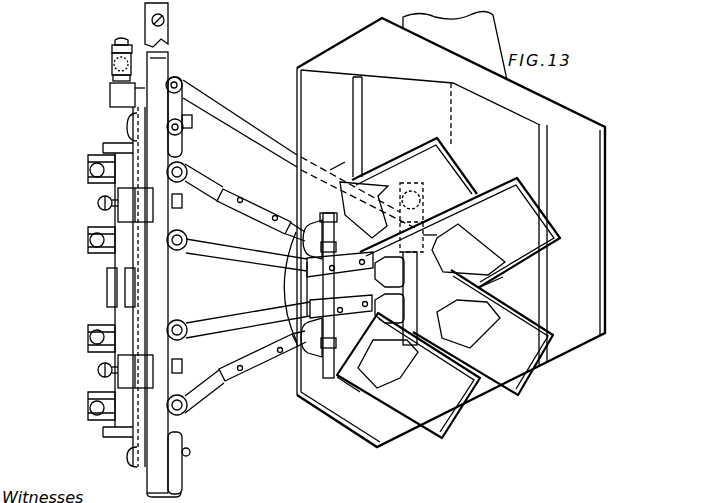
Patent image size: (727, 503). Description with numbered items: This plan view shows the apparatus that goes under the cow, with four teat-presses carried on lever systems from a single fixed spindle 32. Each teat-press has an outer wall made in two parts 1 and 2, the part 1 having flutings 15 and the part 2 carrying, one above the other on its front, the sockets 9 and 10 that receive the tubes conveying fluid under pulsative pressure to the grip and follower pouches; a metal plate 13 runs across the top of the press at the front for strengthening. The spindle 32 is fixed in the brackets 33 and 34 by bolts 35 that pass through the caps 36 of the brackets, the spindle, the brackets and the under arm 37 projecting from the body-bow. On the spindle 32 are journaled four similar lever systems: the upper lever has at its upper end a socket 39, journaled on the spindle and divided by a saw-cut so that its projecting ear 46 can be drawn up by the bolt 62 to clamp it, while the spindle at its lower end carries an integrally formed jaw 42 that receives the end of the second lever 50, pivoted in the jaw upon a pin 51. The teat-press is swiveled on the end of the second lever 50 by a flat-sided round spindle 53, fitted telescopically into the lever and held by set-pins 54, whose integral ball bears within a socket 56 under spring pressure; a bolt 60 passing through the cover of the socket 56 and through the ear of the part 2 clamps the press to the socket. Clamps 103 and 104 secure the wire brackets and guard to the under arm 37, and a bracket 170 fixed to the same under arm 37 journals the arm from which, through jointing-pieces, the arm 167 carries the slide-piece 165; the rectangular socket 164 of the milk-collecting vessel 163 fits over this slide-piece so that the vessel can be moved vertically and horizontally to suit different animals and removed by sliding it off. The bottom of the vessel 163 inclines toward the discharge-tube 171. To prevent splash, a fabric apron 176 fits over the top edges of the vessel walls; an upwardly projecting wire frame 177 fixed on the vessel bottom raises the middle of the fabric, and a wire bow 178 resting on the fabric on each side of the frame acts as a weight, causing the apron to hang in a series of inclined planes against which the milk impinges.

The outer wall part 1 is at (457, 160).
The outer wall part 2 is at (337, 170).
The socket 9 is at (322, 313).
The socket 10 is at (328, 223).
The metal plate 13 is at (393, 212).
The flutings 15 is at (408, 153).
The spindle 32 is at (113, 292).
The bracket 33 is at (130, 207).
The bracket 34 is at (128, 363).
The bolts 35 is at (182, 205).
The caps 36 is at (110, 193).
The under arm 37 is at (167, 68).
The socket 39 is at (128, 157).
The jaw 42 is at (184, 160).
The ear 46 is at (97, 157).
The second lever 50 is at (236, 192).
The pin 51 is at (187, 172).
The round spindle 53 is at (293, 310).
The set-pins 54 is at (283, 230).
The socket 56 is at (330, 250).
The bolt 60 is at (334, 227).
The bolt 62 is at (95, 167).
The clamp 103 is at (182, 87).
The clamp 104 is at (182, 472).
The vessel 163 is at (300, 88).
The rectangular socket 164 is at (417, 222).
The slide-piece 165 is at (450, 228).
The arm 167 is at (232, 118).
The bracket 170 is at (112, 61).
The discharge-tube 171 is at (490, 38).
The apron 176 is at (390, 97).
The wire frame 177 is at (452, 118).
The wire bow 178 is at (365, 120).